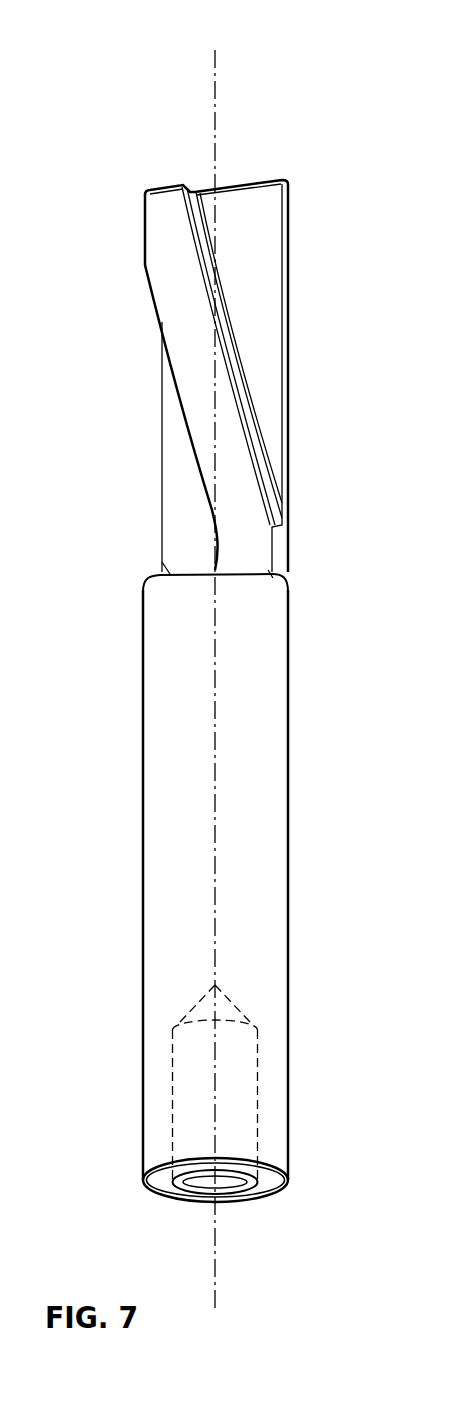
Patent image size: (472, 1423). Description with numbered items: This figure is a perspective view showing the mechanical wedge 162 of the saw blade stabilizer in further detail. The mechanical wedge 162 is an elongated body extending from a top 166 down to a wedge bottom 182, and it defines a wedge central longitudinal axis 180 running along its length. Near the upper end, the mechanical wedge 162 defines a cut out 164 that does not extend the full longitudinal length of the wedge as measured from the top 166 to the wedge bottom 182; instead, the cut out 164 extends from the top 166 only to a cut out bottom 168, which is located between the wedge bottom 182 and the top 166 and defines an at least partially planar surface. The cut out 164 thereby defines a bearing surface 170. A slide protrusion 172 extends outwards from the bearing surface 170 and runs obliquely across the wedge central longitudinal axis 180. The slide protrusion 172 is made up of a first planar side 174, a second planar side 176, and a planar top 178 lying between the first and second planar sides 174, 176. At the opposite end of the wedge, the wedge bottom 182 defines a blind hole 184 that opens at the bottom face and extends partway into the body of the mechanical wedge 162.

The wedge central longitudinal axis 180 is at (215, 66).
The top 166 is at (258, 180).
The bearing surface 170 is at (253, 226).
The cut out 164 is at (244, 298).
The slide protrusion 172 is at (170, 242).
The second planar side 176 is at (232, 348).
The first planar side 174 is at (180, 402).
The planar top 178 is at (232, 437).
The cut out bottom 168 is at (165, 563).
The mechanical wedge 162 is at (232, 663).
The blind hole 184 is at (257, 1078).
The wedge bottom 182 is at (268, 1185).